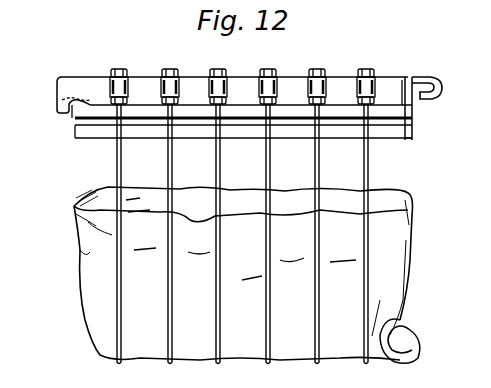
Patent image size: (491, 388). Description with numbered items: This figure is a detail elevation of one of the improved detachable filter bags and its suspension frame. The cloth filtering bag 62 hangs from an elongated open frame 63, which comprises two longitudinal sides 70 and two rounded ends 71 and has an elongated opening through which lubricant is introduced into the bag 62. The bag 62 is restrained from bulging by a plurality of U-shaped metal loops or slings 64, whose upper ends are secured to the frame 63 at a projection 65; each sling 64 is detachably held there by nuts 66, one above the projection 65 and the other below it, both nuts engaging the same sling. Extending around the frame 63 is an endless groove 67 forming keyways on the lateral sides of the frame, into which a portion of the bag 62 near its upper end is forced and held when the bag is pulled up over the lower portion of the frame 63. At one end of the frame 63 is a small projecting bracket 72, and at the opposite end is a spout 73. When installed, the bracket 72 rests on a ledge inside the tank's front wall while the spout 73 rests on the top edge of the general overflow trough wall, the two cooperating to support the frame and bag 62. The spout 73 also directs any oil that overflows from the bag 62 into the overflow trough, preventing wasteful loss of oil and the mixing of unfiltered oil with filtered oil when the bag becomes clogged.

The filtering bag 62 is at (92, 294).
The elongated open frame 63 is at (398, 97).
The U-shaped sling 64 is at (372, 168).
The projection of the frame 65 is at (375, 75).
The nut 66 is at (226, 71).
The endless groove 67 is at (343, 128).
The longitudinal side 70 is at (72, 78).
The rounded end 71 is at (406, 77).
The projecting bracket 72 is at (432, 82).
The spout 73 is at (61, 100).